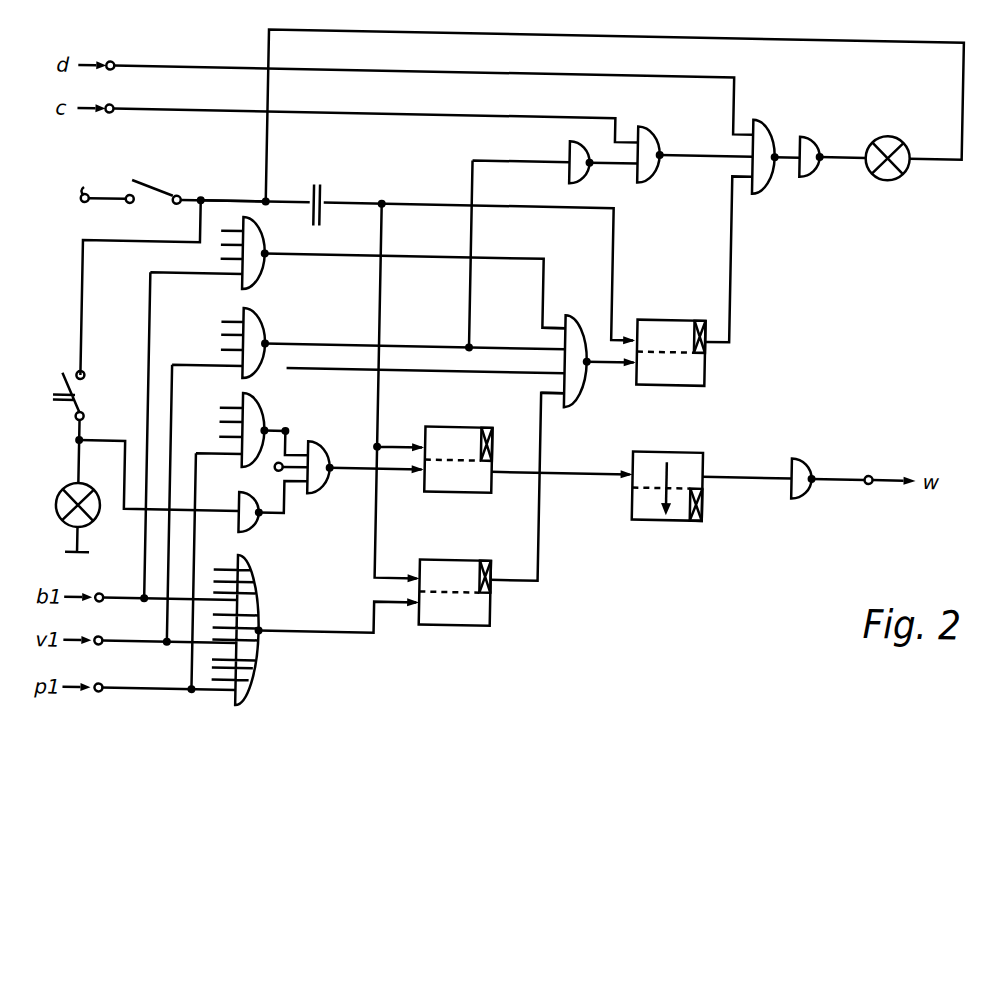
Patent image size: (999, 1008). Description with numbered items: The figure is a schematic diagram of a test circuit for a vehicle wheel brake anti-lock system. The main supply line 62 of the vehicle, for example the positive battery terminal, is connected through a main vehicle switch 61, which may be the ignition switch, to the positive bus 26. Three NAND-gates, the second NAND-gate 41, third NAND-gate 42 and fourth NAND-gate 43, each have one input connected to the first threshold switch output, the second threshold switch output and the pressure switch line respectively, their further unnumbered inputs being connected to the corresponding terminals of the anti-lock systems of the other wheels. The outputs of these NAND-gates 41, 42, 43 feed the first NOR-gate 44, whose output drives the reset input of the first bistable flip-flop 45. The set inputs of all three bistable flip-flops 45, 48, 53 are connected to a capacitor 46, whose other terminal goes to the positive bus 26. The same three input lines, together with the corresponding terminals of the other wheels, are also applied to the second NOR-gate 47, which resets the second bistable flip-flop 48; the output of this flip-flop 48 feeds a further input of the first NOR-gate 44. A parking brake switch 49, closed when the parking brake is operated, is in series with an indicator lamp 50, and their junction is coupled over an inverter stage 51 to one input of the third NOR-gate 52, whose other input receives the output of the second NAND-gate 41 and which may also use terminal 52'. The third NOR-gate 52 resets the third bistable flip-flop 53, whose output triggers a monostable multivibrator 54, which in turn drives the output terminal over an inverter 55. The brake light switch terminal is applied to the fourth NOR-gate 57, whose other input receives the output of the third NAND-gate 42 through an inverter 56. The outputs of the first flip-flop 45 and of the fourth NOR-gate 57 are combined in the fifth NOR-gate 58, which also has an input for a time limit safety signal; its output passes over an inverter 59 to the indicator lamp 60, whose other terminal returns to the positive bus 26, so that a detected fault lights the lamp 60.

The positive bus 26 is at (231, 201).
The second NAND-gate 41 is at (250, 420).
The third NAND-gate 42 is at (248, 329).
The fourth NAND-gate 43 is at (255, 245).
The first NOR-gate 44 is at (576, 320).
The first bistable flip-flop 45 is at (685, 384).
The capacitor 46 is at (321, 193).
The second NOR-gate 47 is at (256, 700).
The second bistable flip-flop 48 is at (479, 623).
The parking brake switch 49 is at (85, 401).
The indicator lamp 50 is at (97, 513).
The inverter stage 51 is at (252, 520).
The third NOR-gate 52 is at (331, 451).
The terminal 52' is at (260, 477).
The third bistable flip-flop 53 is at (470, 485).
The monostable multivibrator 54 is at (693, 464).
The inverter 55 is at (808, 458).
The inverter 56 is at (575, 176).
The fourth NOR-gate 57 is at (643, 132).
The fifth NOR-gate 58 is at (758, 124).
The inverter 59 is at (812, 142).
The indicator lamp 60 is at (886, 170).
The main vehicle switch 61 is at (156, 192).
The main supply line 62 is at (75, 178).